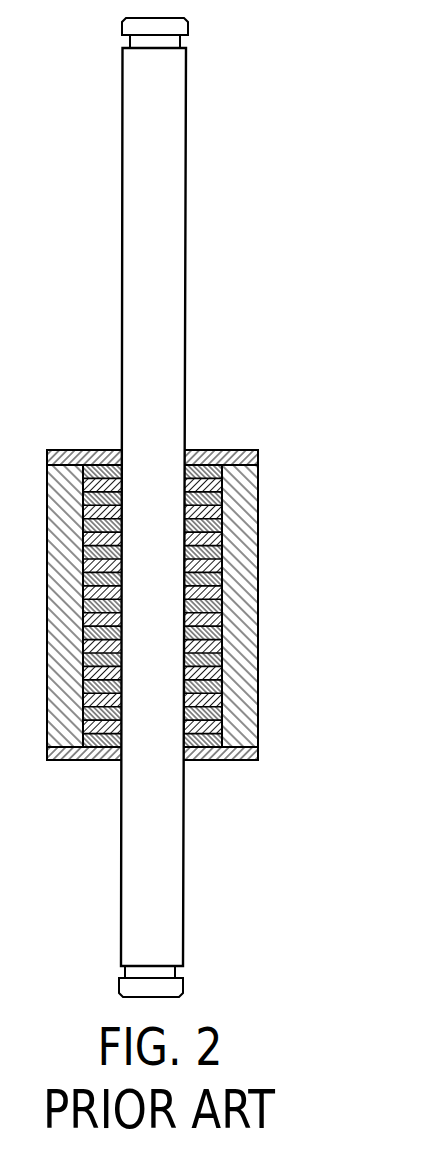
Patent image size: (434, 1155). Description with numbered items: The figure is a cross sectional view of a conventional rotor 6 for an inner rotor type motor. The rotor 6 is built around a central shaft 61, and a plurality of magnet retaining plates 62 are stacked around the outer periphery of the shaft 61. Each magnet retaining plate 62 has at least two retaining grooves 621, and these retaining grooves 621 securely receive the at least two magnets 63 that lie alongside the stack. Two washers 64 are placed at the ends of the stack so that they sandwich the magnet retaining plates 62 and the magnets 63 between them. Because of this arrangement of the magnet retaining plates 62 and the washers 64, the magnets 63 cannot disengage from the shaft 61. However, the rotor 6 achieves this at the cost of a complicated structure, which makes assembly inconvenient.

The rotor 6 is at (210, 507).
The shaft 61 is at (140, 287).
The magnet retaining plates 62 is at (210, 606).
The retaining grooves 621 is at (222, 564).
The magnets 63 is at (245, 477).
The washers 64 is at (222, 450).